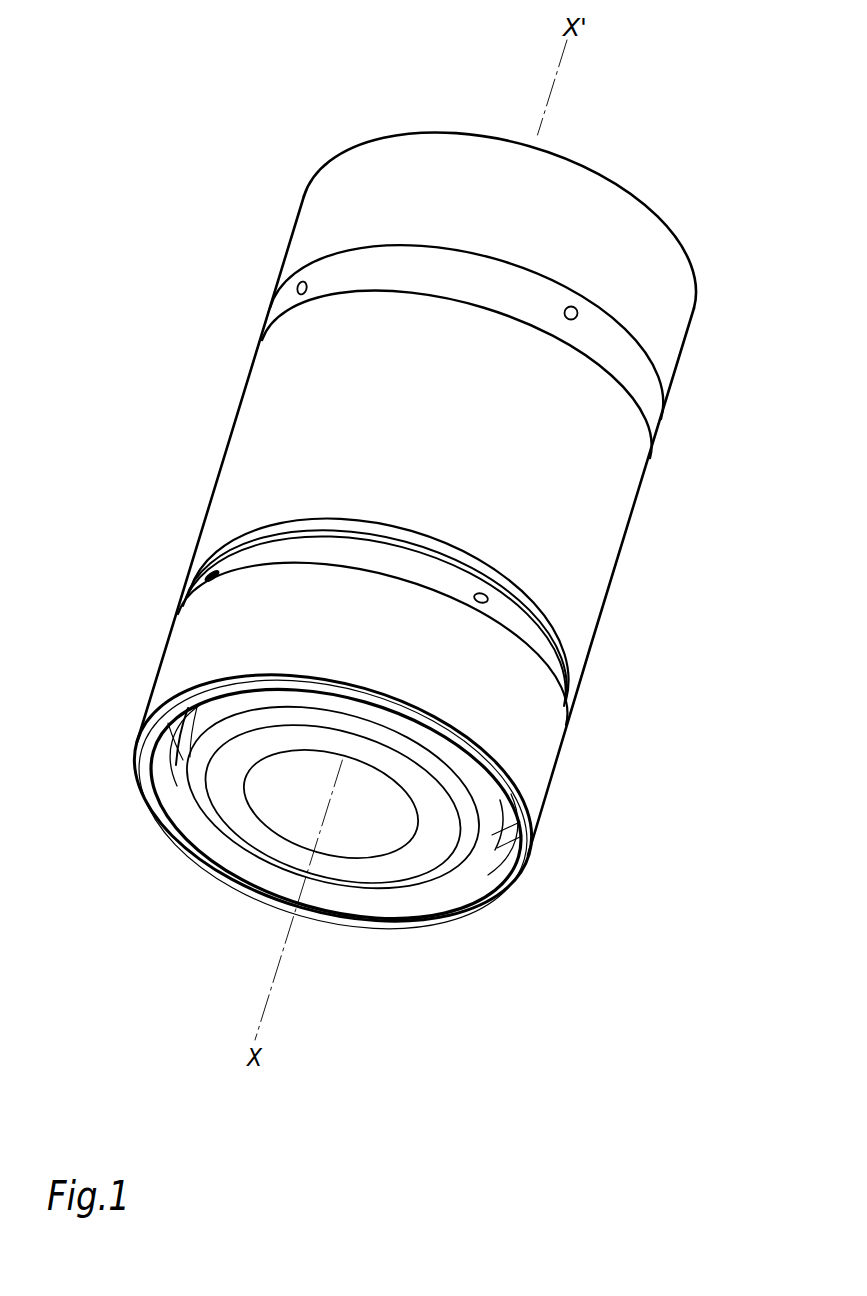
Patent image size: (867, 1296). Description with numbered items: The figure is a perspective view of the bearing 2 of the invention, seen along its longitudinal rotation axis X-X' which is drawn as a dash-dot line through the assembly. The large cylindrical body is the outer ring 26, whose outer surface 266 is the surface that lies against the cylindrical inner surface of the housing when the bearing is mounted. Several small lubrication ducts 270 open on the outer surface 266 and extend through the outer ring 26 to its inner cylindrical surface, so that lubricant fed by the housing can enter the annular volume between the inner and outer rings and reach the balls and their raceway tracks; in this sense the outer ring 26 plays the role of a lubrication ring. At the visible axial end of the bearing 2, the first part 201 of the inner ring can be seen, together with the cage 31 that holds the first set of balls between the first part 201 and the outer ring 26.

The bearing 2 is at (436, 529).
The outer ring 26 is at (258, 416).
The outer surface 266 is at (570, 500).
The lubrication ducts 270 is at (300, 284).
The cage 31 is at (192, 757).
The first part of inner ring 201 is at (238, 818).